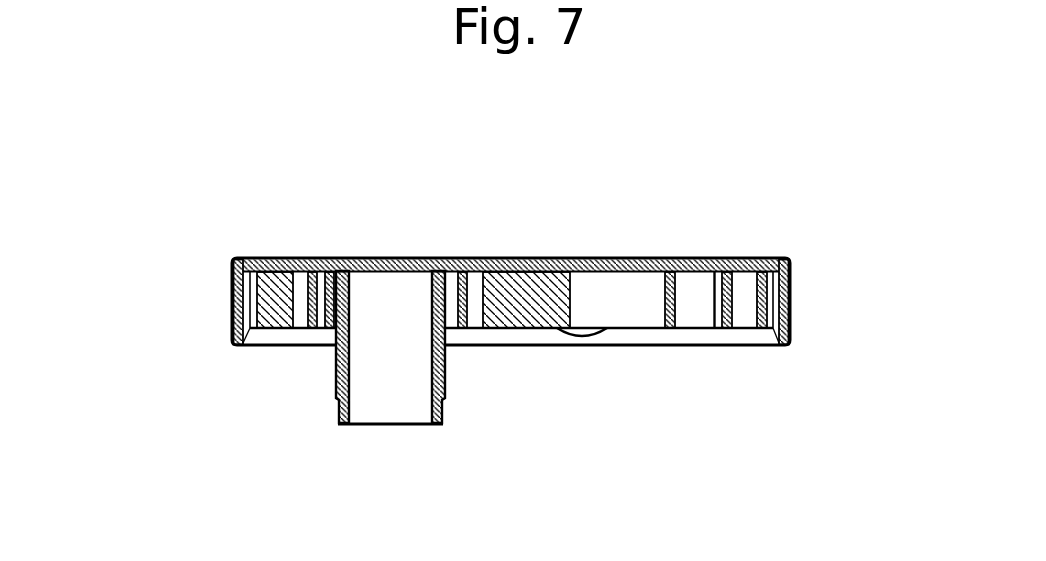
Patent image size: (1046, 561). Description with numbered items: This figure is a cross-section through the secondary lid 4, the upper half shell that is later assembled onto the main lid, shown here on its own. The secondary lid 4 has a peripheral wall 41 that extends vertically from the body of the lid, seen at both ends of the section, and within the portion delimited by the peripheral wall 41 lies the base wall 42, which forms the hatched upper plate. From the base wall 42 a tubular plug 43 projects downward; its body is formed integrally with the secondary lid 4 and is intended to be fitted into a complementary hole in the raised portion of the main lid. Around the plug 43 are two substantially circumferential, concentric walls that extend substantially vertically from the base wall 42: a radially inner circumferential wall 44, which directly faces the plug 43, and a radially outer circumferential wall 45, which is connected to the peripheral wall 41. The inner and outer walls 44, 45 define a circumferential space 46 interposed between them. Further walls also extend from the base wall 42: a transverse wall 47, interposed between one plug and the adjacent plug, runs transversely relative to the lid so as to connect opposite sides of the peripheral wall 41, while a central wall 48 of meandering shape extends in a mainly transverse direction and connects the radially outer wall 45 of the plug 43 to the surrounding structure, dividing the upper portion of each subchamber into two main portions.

The secondary lid 4 is at (816, 243).
The peripheral wall 41 is at (232, 302).
The base wall 42 is at (650, 258).
The tubular plug 43 is at (446, 402).
The radially inner circumferential wall 44 is at (323, 330).
The radially outer circumferential wall 45 is at (300, 328).
The circumferential space 46 is at (303, 290).
The transverse wall 47 is at (690, 312).
The central wall 48 is at (278, 335).